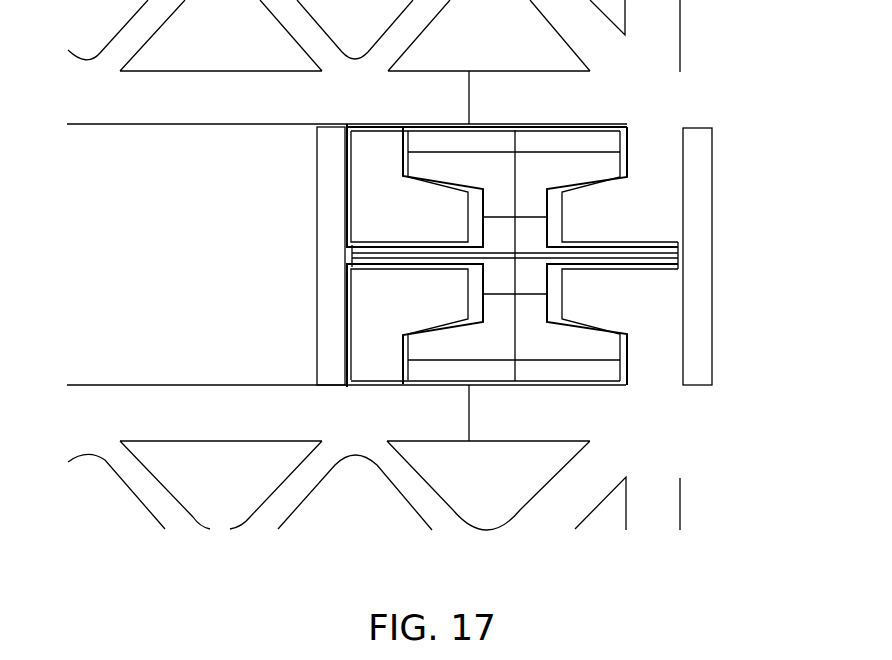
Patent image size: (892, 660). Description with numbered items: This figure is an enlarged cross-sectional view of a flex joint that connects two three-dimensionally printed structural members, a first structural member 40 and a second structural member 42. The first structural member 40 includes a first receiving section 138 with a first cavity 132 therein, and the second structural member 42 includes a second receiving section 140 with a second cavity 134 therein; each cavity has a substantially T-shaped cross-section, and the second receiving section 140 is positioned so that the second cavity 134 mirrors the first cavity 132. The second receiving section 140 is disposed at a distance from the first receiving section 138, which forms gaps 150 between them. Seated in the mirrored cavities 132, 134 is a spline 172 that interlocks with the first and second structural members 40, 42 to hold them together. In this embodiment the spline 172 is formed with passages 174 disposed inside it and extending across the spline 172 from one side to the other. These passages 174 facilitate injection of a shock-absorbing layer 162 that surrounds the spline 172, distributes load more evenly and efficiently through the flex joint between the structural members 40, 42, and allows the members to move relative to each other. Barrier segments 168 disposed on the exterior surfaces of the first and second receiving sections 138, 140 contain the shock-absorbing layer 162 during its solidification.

The first structural member 40 is at (153, 100).
The second structural member 42 is at (130, 411).
The first cavity 132 is at (403, 162).
The second cavity 134 is at (402, 360).
The first receiving section 138 is at (331, 150).
The second receiving section 140 is at (331, 345).
The gaps 150 is at (373, 266).
The shock-absorbing layer 162 is at (623, 147).
The barrier segments 168 is at (331, 203).
The spline 172 is at (480, 140).
The passages 174 is at (537, 150).